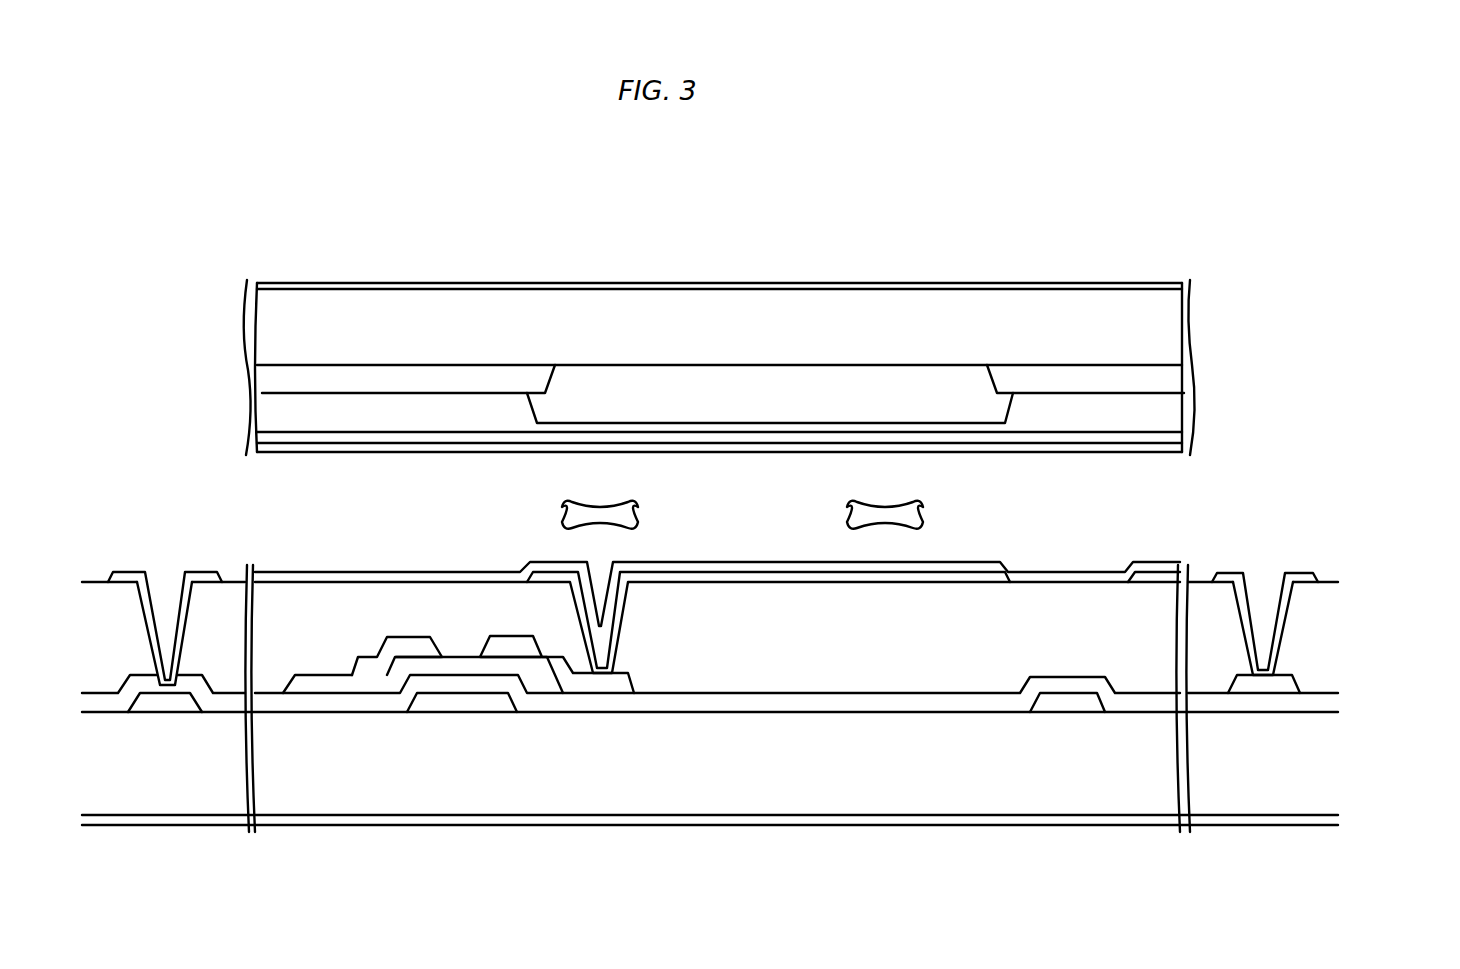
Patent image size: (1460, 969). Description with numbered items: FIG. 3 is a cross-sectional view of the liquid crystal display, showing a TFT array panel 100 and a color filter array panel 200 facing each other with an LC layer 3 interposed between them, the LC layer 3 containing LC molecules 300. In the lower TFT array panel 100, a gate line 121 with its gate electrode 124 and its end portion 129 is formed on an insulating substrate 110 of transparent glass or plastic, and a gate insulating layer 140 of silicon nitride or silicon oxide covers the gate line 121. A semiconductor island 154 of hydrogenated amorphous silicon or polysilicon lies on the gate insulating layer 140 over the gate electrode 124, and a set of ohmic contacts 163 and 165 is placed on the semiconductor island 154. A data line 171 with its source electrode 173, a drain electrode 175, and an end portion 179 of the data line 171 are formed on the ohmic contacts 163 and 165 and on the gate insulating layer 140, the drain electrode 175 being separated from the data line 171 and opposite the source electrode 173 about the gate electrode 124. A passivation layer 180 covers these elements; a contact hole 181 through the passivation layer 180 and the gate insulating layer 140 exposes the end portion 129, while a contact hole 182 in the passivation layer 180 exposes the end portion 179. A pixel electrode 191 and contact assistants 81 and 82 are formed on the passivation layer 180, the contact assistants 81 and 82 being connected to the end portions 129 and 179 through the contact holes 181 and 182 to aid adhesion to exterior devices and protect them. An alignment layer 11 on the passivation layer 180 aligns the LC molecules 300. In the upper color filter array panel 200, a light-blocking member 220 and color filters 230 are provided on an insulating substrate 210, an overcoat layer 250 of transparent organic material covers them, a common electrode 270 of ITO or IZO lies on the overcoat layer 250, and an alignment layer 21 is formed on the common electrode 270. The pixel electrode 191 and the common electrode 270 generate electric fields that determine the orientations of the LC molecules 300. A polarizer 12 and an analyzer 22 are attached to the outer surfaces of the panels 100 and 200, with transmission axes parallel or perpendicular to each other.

The LC layer 3 is at (1216, 503).
The alignment layer 11 is at (290, 572).
The polarizer 12 is at (760, 827).
The alignment layer 21 is at (1118, 448).
The analyzer 22 is at (634, 284).
The contact assistant 81 is at (127, 572).
The contact assistant 82 is at (1305, 573).
The TFT array panel 100 is at (1361, 658).
The insulating substrate 110 is at (845, 785).
The gate line 121 is at (1057, 703).
The gate electrode 124 is at (456, 703).
The end portion of gate line 129 is at (162, 703).
The gate insulating layer 140 is at (913, 700).
The semiconductor island 154 is at (490, 670).
The ohmic contact 163 is at (387, 662).
The ohmic contact 165 is at (548, 690).
The data line 171 is at (303, 687).
The source electrode 173 is at (378, 680).
The drain electrode 175 is at (612, 683).
The end portion of data line 179 is at (1265, 677).
The passivation layer 180 is at (1137, 668).
The contact hole 181 is at (143, 607).
The contact hole 182 is at (1247, 617).
The pixel electrode 191 is at (683, 582).
The color filter array panel 200 is at (1241, 354).
The insulating substrate 210 is at (778, 337).
The light-blocking member 220 is at (465, 380).
The color filter 230 is at (885, 390).
The overcoat layer 250 is at (350, 415).
The common electrode 270 is at (978, 440).
The LC molecules 300 is at (921, 502).